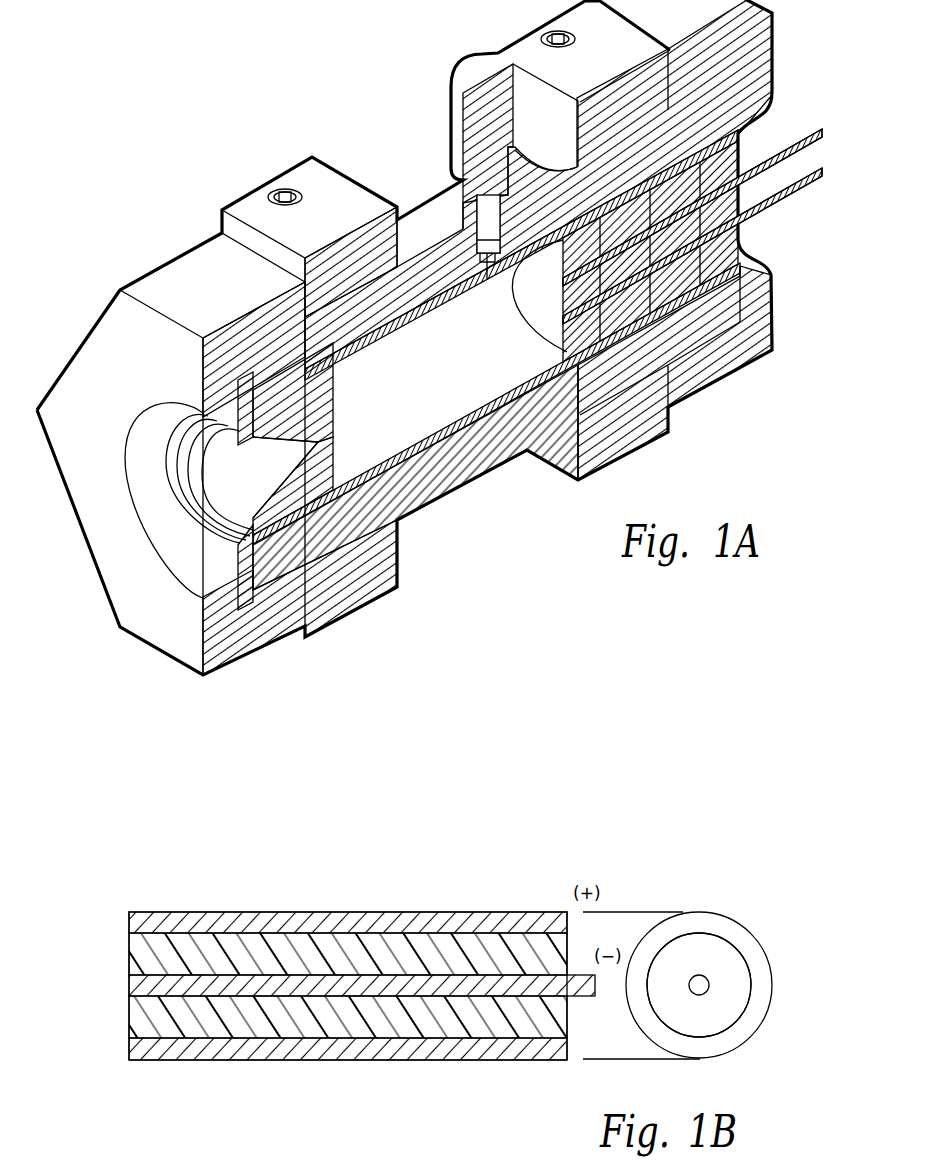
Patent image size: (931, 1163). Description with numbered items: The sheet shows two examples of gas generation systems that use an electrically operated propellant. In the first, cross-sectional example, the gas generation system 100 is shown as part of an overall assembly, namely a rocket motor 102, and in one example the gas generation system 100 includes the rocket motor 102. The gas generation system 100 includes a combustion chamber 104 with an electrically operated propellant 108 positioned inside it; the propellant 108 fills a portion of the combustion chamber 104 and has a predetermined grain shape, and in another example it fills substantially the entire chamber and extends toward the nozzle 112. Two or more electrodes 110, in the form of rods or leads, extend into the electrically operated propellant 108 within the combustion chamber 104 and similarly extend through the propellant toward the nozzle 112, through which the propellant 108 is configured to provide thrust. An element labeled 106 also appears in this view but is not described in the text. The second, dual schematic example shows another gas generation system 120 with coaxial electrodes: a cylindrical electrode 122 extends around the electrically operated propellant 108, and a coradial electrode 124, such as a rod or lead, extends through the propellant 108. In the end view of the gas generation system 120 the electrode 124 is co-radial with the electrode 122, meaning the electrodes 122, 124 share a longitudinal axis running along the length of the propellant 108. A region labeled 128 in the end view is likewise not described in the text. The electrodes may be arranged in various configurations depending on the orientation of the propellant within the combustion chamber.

In FIG. 1A, the gas generation system 100 is at (768, 242).
In FIG. 1A, the rocket motor 102 is at (706, 406).
In FIG. 1A, the combustion chamber 104 is at (448, 383).
In FIG. 1A, the sensor element 106 is at (440, 215).
In FIG. 1A, the electrically operated propellant 108 is at (563, 300).
In FIG. 1B, the electrically operated propellant 108 is at (177, 1025).
In FIG. 1A, the electrodes 110 is at (822, 127).
In FIG. 1A, the rocket nozzle 112 is at (345, 455).
In FIG. 1B, the gas generation system 120 is at (397, 896).
In FIG. 1B, the cylindrical electrode 122 is at (232, 912).
In FIG. 1B, the coradial electrode 124 is at (590, 996).
In FIG. 1B, the piezoelectric layer 128 is at (735, 966).